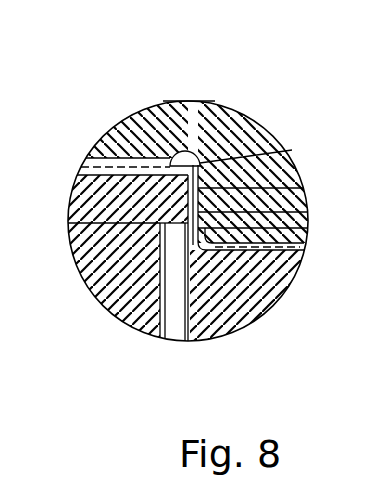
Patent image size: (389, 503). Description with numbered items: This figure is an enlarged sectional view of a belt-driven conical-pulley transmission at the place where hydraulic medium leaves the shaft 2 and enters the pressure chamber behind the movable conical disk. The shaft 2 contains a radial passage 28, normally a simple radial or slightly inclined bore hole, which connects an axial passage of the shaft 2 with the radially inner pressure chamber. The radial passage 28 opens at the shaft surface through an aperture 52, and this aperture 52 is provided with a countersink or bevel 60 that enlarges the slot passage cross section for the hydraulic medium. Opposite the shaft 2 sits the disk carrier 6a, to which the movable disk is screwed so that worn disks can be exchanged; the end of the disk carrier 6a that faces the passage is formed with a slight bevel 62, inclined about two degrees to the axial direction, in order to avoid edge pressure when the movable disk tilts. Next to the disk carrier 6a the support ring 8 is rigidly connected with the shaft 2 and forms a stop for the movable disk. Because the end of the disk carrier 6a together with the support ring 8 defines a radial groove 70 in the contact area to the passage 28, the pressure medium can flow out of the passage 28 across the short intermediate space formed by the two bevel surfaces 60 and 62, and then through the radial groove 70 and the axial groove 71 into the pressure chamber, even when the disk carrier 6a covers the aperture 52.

The support ring 8 is at (210, 128).
The disk carrier 6a is at (137, 183).
The axial groove 71 is at (291, 150).
The radial groove 70 is at (280, 188).
The bevel 62 is at (280, 217).
The countersink 60 is at (280, 237).
The aperture 52 is at (166, 222).
The shaft 2 is at (94, 271).
The radial passage 28 is at (168, 303).